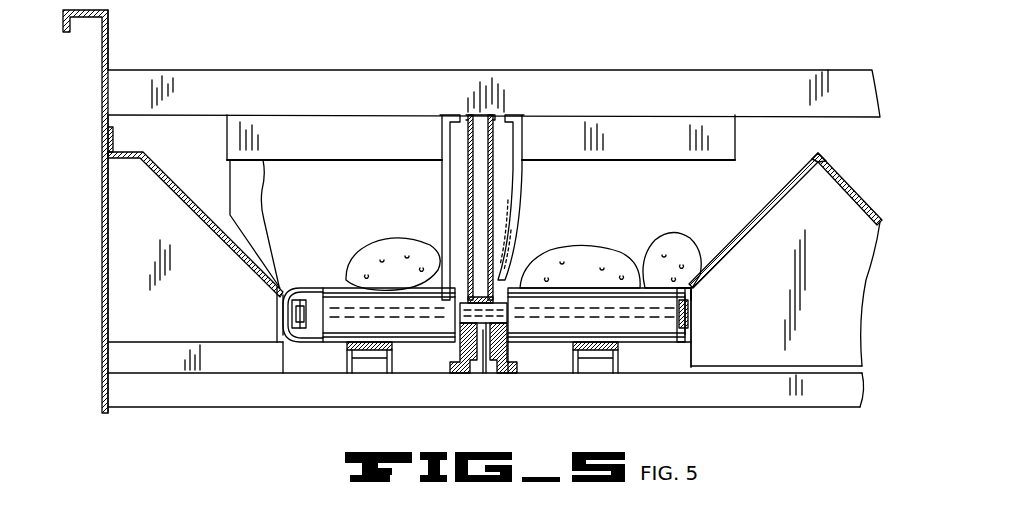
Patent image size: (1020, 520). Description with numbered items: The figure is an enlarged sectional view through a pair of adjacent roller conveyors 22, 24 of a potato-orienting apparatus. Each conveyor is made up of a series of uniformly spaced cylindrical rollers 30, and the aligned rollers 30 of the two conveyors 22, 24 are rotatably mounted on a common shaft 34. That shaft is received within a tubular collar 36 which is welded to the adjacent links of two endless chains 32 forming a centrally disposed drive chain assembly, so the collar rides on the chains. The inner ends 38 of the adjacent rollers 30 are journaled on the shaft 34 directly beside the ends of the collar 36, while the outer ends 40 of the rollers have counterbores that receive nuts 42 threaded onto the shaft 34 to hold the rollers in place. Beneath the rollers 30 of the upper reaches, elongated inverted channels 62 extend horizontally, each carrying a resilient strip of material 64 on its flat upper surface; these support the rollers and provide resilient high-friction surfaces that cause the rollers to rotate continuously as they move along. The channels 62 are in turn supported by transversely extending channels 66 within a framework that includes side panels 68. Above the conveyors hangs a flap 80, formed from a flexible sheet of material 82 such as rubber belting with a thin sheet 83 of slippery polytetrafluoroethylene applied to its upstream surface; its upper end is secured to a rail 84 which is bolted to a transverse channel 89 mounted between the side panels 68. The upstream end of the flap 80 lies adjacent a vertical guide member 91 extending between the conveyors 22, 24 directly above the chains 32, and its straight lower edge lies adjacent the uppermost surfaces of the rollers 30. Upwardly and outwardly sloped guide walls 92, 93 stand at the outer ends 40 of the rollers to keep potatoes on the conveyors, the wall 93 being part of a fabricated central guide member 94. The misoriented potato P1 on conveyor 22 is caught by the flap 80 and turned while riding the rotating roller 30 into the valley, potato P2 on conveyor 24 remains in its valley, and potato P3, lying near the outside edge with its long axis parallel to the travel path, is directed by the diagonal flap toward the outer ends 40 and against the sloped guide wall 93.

The roller conveyor 22 is at (296, 273).
The roller conveyor 24 is at (698, 282).
The cylindrical roller 30 is at (412, 335).
The endless chain 32 is at (480, 325).
The common shaft 34 is at (645, 338).
The tubular collar 36 is at (510, 283).
The inner end of roller 38 is at (470, 330).
The outer end of roller 40 is at (284, 296).
The nut 42 is at (284, 322).
The inverted channel 62 is at (358, 365).
The resilient strip of material 64 is at (346, 348).
The transverse channel 66 is at (162, 398).
The side panel 68 is at (102, 302).
The flap 80 is at (382, 178).
The flexible sheet of material 82 is at (237, 172).
The thin sheet of slippery material 83 is at (275, 196).
The rail 84 is at (308, 130).
The transverse channel 89 is at (379, 76).
The vertical guide member 91 is at (494, 197).
The sloped guide wall 92 is at (222, 240).
The sloped guide wall 93 is at (786, 206).
The central guide member 94 is at (840, 158).
The misoriented potato P1 is at (383, 246).
The potato P2 is at (576, 248).
The potato P3 is at (672, 234).